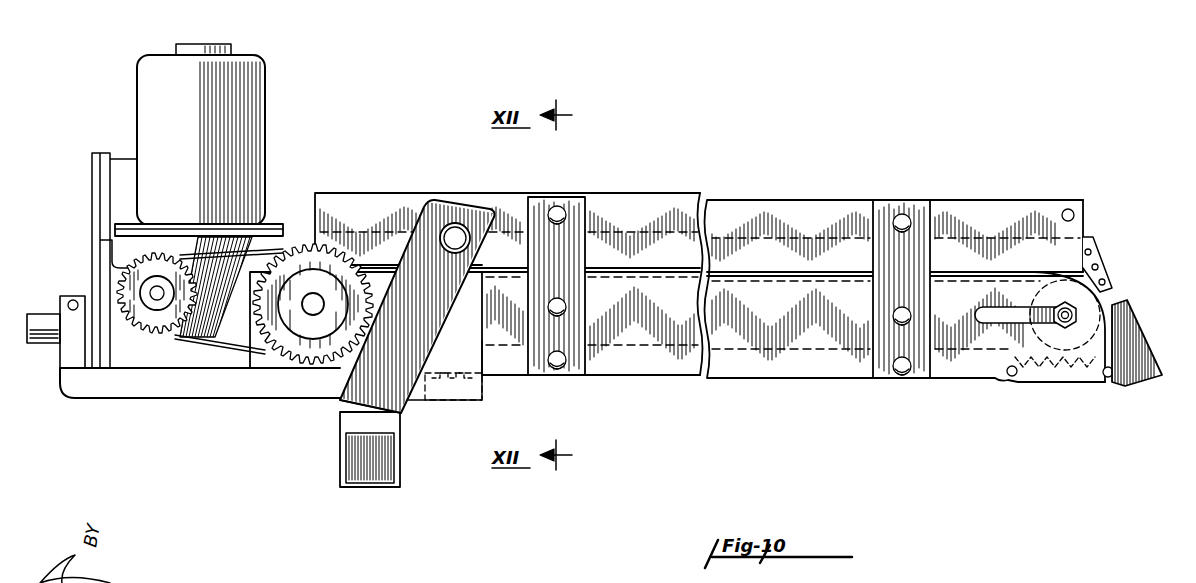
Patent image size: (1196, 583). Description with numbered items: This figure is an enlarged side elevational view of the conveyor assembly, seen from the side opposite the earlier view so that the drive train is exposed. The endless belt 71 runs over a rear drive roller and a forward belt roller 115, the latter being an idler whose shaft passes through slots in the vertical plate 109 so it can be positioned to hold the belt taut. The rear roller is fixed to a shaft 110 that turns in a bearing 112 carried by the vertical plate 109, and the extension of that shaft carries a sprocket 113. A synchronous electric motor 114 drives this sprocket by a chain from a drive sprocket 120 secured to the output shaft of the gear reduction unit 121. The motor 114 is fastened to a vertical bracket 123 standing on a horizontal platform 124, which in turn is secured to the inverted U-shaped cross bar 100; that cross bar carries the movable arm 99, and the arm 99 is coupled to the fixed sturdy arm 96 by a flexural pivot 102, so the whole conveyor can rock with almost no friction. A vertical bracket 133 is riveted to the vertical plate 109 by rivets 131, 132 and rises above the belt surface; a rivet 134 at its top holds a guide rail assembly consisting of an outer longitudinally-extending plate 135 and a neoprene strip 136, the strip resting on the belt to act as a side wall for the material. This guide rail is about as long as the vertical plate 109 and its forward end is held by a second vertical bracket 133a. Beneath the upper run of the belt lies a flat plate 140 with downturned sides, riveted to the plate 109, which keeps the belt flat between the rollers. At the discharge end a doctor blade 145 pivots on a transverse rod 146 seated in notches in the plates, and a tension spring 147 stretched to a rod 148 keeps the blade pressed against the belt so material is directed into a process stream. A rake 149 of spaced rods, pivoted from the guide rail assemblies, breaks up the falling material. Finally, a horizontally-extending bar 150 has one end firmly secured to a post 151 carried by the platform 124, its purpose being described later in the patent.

The endless belt 71 is at (1105, 296).
The sturdy arm 96 is at (362, 400).
The second arm 99 is at (475, 345).
The cross bar 100 is at (447, 392).
The flexural pivot 102 is at (440, 212).
The vertical plate 109 is at (812, 365).
The shaft 110 is at (300, 325).
The bearing 112 is at (356, 290).
The sprocket 113 is at (313, 306).
The synchronous electric motor 114 is at (142, 62).
The forward belt roller 115 is at (340, 452).
The drive sprocket 120 is at (157, 335).
The gear reduction unit 121 is at (196, 335).
The vertical bracket 123 is at (92, 170).
The horizontal platform 124 is at (103, 385).
The rivet 131 is at (562, 370).
The rivet 132 is at (563, 320).
The vertical bracket 133 is at (540, 210).
The second vertical bracket 133a is at (890, 208).
The rivet 134 is at (562, 210).
The outer longitudinally-extending plate 135 is at (660, 208).
The neoprene strip 136 is at (733, 235).
The flat plate 140 is at (615, 285).
The doctor blade 145 is at (1142, 338).
The transverse rod 146 is at (1108, 380).
The tension spring 147 is at (1068, 372).
The rod 148 is at (1008, 378).
The rake 149 is at (1098, 256).
The horizontally-extending bar 150 is at (45, 314).
The post 151 is at (73, 352).